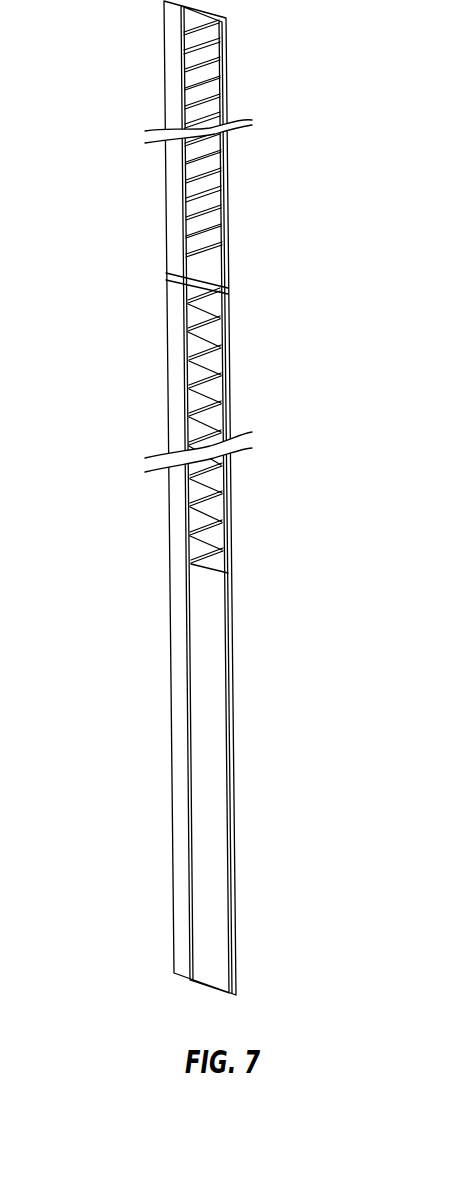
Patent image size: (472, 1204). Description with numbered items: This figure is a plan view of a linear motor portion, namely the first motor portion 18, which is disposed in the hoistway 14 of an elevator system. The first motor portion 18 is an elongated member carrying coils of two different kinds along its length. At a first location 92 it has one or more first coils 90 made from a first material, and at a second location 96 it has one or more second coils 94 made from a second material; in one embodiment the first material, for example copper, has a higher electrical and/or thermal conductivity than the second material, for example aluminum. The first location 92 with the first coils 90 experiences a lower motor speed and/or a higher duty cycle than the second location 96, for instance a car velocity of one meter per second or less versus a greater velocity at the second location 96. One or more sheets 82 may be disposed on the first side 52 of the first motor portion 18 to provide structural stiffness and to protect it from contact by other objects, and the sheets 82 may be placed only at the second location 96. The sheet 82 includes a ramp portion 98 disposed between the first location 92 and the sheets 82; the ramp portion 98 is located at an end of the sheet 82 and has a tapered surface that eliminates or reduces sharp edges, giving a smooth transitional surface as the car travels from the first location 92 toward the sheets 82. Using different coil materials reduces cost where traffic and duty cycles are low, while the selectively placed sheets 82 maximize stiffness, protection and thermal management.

The hoistway 14 is at (223, 498).
The first motor portion 18 is at (223, 498).
The second location 96 is at (212, 152).
The second coil 94 is at (177, 139).
The first coil 90 is at (178, 418).
The first location 92 is at (225, 444).
The ramp portion 98 is at (205, 555).
The first side 52 is at (210, 685).
The sheet 82 is at (215, 790).